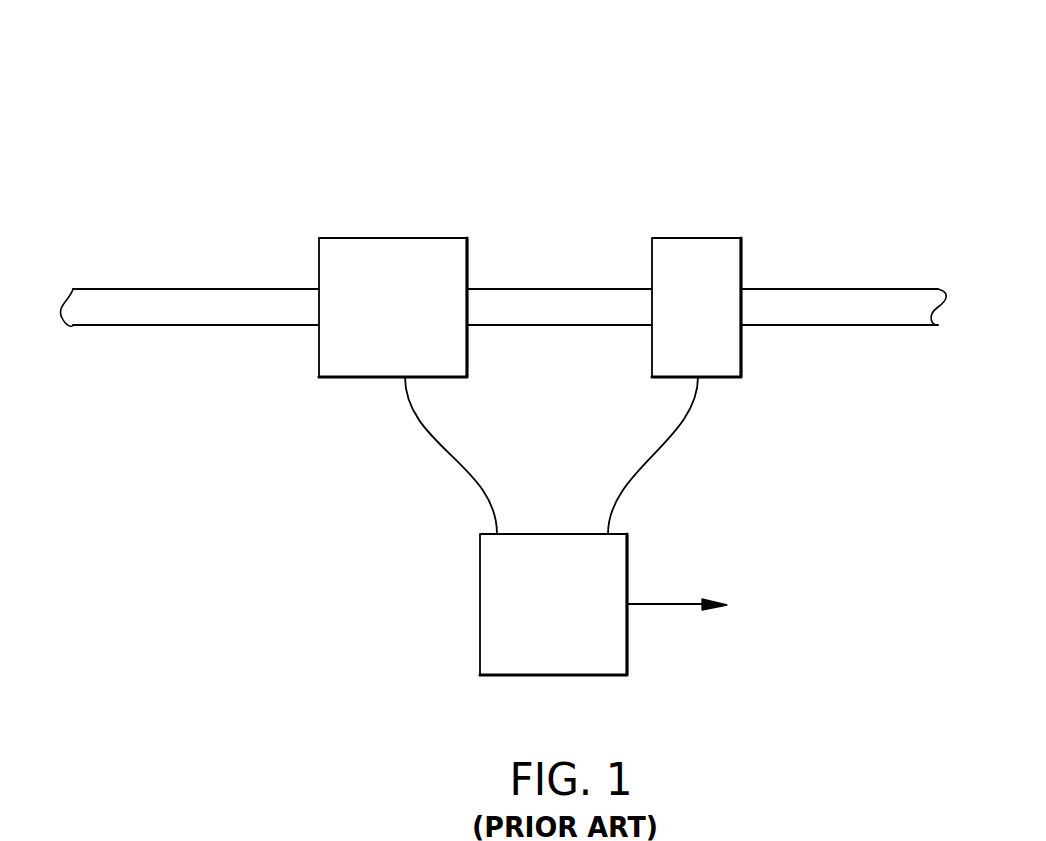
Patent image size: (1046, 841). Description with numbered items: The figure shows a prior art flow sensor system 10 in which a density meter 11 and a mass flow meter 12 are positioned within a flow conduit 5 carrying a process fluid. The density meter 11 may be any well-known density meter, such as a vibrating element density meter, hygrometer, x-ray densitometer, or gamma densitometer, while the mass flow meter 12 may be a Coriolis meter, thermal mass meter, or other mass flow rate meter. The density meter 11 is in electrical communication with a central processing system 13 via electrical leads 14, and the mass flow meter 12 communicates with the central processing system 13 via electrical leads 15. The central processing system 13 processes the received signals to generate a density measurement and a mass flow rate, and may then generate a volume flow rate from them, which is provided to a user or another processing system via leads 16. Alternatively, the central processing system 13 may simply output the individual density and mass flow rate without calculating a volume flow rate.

The flow conduit 5 is at (213, 289).
The prior art flow sensor system 10 is at (786, 84).
The density meter 11 is at (380, 317).
The mass flow meter 12 is at (685, 317).
The central processing system 13 is at (542, 615).
The electrical leads 14 is at (452, 462).
The electrical leads 15 is at (672, 447).
The leads 16 is at (695, 603).